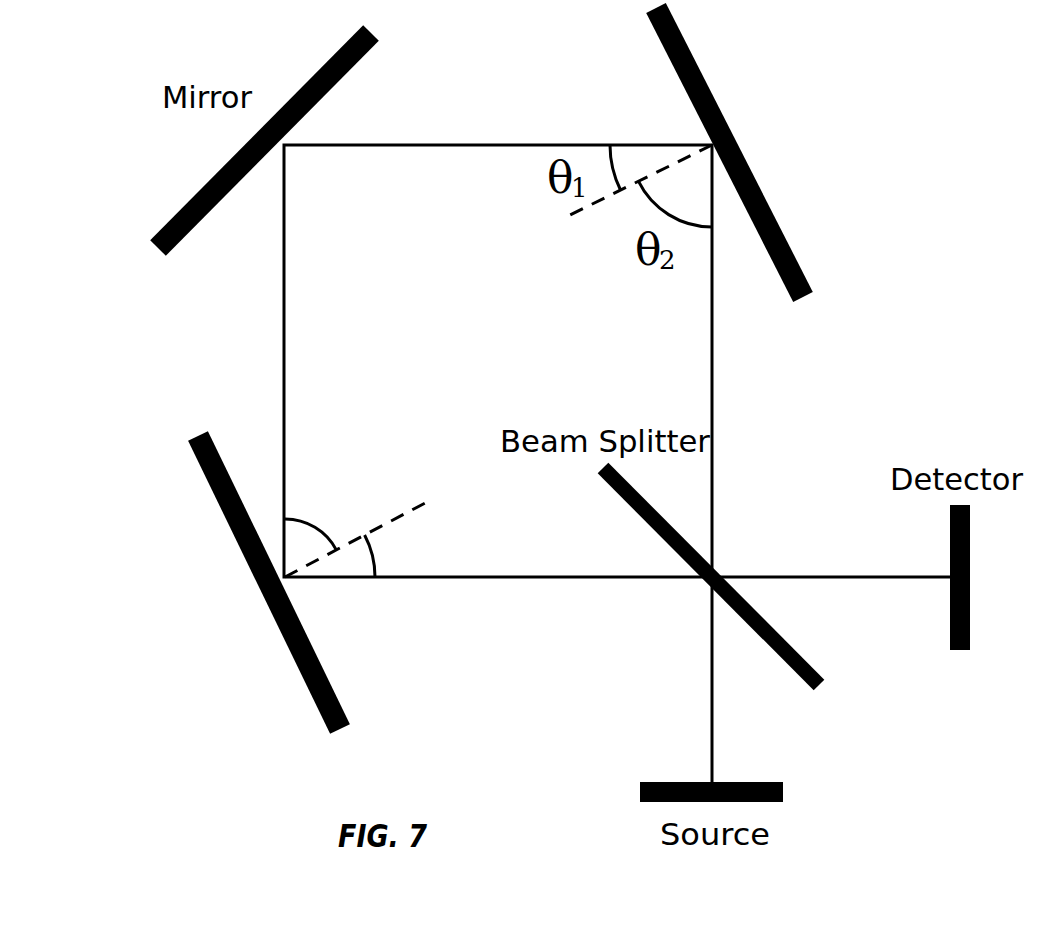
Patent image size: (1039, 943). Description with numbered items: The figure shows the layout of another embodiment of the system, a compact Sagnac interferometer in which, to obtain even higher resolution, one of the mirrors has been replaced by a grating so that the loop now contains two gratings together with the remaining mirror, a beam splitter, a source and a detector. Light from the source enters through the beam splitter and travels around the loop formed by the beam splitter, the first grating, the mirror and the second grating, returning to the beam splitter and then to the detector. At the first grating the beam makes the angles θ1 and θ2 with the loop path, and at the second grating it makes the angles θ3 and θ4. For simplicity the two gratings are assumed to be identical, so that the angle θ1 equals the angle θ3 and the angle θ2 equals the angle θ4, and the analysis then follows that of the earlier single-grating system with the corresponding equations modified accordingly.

The angle θ 1 is at (783, 152).
The angle θ 2 is at (242, 589).
The angle θ 3 is at (404, 554).
The angle θ 4 is at (321, 513).